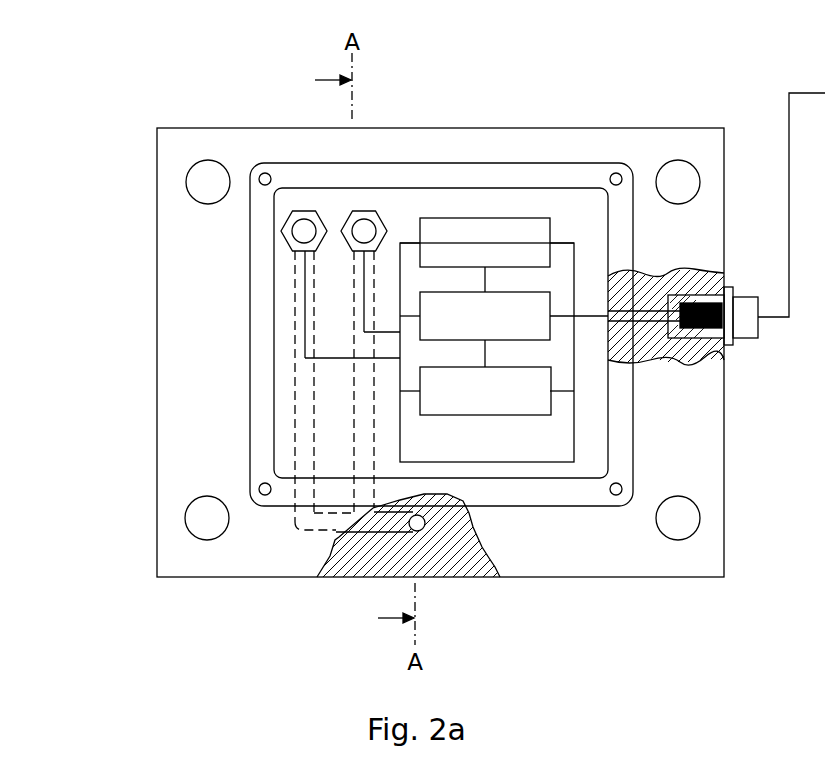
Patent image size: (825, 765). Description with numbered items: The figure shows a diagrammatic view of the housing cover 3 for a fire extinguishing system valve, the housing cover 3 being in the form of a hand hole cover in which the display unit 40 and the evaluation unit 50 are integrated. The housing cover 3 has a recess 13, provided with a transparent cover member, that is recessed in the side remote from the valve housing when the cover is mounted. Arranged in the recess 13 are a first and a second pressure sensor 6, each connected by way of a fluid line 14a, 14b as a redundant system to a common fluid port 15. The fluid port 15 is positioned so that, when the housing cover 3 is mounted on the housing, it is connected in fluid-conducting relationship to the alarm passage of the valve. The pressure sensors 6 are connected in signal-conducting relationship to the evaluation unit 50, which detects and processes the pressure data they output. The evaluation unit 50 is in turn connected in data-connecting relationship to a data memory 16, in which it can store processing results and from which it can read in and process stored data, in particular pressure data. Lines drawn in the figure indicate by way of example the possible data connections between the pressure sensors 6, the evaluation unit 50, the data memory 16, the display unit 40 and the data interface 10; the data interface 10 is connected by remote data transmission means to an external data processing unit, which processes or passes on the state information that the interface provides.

The housing cover 3 is at (577, 559).
The pressure sensor 6 is at (362, 210).
The data interface 10 is at (740, 361).
The recess 13 is at (504, 268).
The fluid line 14a is at (305, 383).
The fluid line 14b is at (363, 437).
The fluid port 15 is at (430, 533).
The data memory 16 is at (485, 316).
The display unit 40 is at (485, 391).
The evaluation unit 50 is at (485, 242).